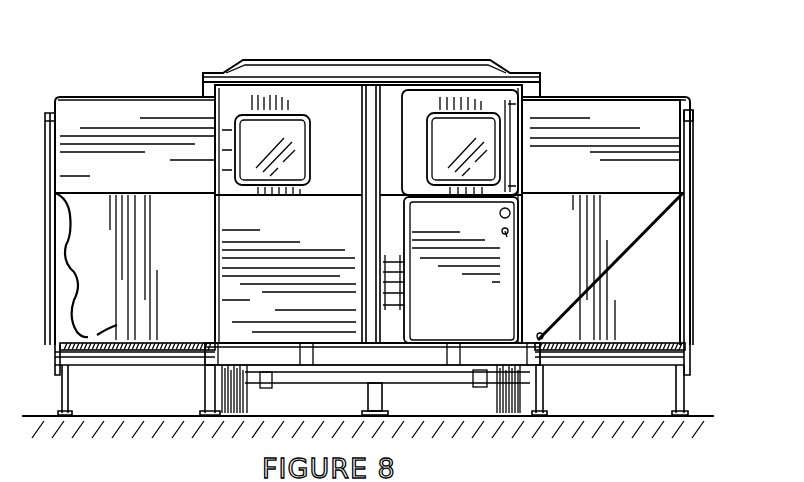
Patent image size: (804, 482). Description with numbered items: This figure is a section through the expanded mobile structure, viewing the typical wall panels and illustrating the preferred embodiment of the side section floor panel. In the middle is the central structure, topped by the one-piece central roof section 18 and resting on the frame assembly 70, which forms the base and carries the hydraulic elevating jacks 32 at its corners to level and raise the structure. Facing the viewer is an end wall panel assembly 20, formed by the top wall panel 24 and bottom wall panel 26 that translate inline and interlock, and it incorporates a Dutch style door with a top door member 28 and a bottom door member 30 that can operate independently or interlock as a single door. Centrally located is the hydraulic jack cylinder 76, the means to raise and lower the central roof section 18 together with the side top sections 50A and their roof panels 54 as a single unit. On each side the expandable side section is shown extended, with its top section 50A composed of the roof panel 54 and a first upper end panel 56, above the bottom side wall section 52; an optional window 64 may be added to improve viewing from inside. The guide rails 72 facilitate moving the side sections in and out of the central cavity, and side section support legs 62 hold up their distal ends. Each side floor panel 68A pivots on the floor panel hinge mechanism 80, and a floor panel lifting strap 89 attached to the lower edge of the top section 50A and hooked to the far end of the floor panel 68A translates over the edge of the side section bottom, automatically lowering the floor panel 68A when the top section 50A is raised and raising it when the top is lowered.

The central roof section 18 is at (348, 60).
The end wall panel assembly 20 is at (322, 106).
The top wall panel 24 is at (350, 162).
The bottom wall panel 26 is at (265, 336).
The top door member 28 is at (504, 108).
The bottom door member 30 is at (470, 324).
The hydraulic elevating jacks 32 is at (212, 385).
The top section 50A is at (52, 84).
The bottom side wall section 52 is at (700, 282).
The roof panel 54 is at (118, 97).
The first upper end panel 56 is at (170, 182).
The side section support legs 62 is at (68, 377).
The windows 64 is at (694, 160).
The side floor panels 68A is at (148, 310).
The frame assembly 70 is at (433, 362).
The guide rails 72 is at (117, 365).
The hydraulic jack cylinder 76 is at (372, 230).
The floor panel hinge mechanism 80 is at (60, 348).
The floor panel lifting straps 89 is at (72, 262).